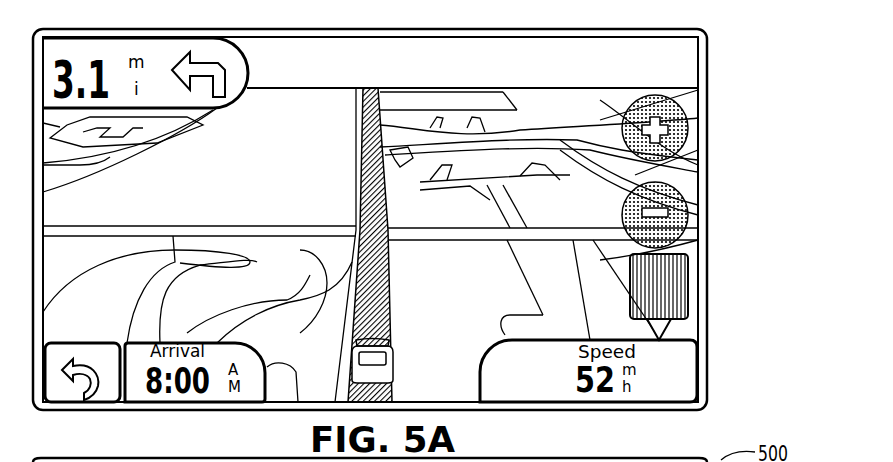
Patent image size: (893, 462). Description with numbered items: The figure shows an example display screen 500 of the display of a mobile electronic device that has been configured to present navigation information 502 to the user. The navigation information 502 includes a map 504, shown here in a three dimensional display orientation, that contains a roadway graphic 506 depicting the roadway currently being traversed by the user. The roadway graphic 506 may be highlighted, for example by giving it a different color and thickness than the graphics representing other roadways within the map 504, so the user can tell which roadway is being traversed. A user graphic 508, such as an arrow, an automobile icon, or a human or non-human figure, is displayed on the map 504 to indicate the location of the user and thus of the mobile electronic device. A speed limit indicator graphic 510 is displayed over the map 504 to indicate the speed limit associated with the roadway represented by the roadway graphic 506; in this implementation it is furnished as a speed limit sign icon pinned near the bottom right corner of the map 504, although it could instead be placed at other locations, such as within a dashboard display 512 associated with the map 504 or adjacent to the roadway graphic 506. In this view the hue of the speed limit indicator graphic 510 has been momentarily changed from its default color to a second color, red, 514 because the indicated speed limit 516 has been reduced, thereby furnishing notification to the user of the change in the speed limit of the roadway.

The display screen 500 is at (720, 28).
The navigation information 502 is at (692, 188).
The map 504 is at (498, 263).
The roadway graphic 506 is at (643, 150).
The user graphic 508 is at (395, 342).
The speed limit indicator graphic 510 is at (704, 294).
The dashboard display 512 is at (687, 62).
The second color (red) 514 is at (683, 300).
The indicated speed limit 516 is at (685, 308).